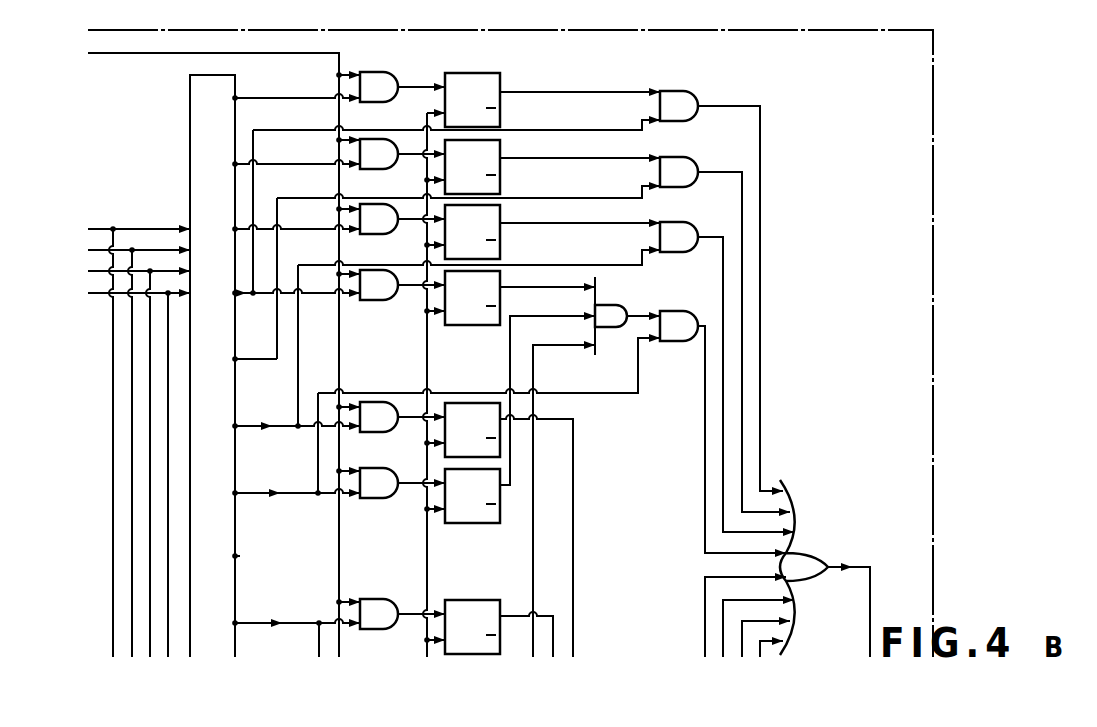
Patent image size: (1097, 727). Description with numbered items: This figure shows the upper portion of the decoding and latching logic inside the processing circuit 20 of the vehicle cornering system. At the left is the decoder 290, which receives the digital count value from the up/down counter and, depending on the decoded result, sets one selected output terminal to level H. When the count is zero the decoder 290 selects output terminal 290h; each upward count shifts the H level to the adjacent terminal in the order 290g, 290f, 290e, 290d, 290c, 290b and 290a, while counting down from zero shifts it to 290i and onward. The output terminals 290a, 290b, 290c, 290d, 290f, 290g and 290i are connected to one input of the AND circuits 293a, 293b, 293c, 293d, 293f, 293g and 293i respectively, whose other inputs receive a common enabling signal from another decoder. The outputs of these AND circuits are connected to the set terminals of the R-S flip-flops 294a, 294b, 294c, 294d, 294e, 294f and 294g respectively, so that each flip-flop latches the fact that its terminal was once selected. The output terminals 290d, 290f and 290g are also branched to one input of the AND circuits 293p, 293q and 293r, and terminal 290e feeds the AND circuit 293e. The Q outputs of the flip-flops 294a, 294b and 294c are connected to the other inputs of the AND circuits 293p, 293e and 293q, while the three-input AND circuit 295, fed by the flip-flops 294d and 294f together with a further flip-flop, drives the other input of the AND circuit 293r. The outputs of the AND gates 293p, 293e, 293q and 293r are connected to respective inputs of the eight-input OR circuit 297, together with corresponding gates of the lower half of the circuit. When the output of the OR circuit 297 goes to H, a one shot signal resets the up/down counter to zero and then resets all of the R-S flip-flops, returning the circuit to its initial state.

The processing circuit 20 is at (935, 45).
The decoder 290 is at (190, 92).
The output terminal of decoder 290a is at (237, 96).
The output terminal of decoder 290b is at (236, 160).
The output terminal of decoder 290c is at (240, 223).
The output terminal of decoder 290d is at (238, 300).
The output terminal of decoder 290e is at (237, 361).
The output terminal of decoder 290f is at (237, 428).
The output terminal of decoder 290g is at (237, 493).
The output terminal of decoder 290h is at (239, 558).
The output terminal of decoder 290i is at (238, 626).
The AND circuit 293a is at (383, 103).
The AND circuit 293b is at (383, 170).
The AND circuit 293c is at (383, 235).
The AND circuit 293d is at (383, 301).
The AND circuit 293f is at (383, 433).
The AND circuit 293g is at (383, 499).
The AND circuit 293i is at (386, 630).
The AND circuit 293p is at (690, 122).
The AND circuit 293e is at (690, 188).
The AND circuit 293q is at (680, 253).
The AND circuit 293r is at (676, 341).
The R-S flip-flop 294a is at (502, 117).
The R-S flip-flop 294b is at (502, 183).
The R-S flip-flop 294c is at (502, 251).
The R-S flip-flop 294d is at (465, 326).
The R-S flip-flop 294e is at (476, 403).
The R-S flip-flop 294f is at (467, 524).
The R-S flip-flop 294g is at (477, 600).
The three-input AND circuit 295 is at (610, 328).
The eight-input OR circuit 297 is at (820, 553).